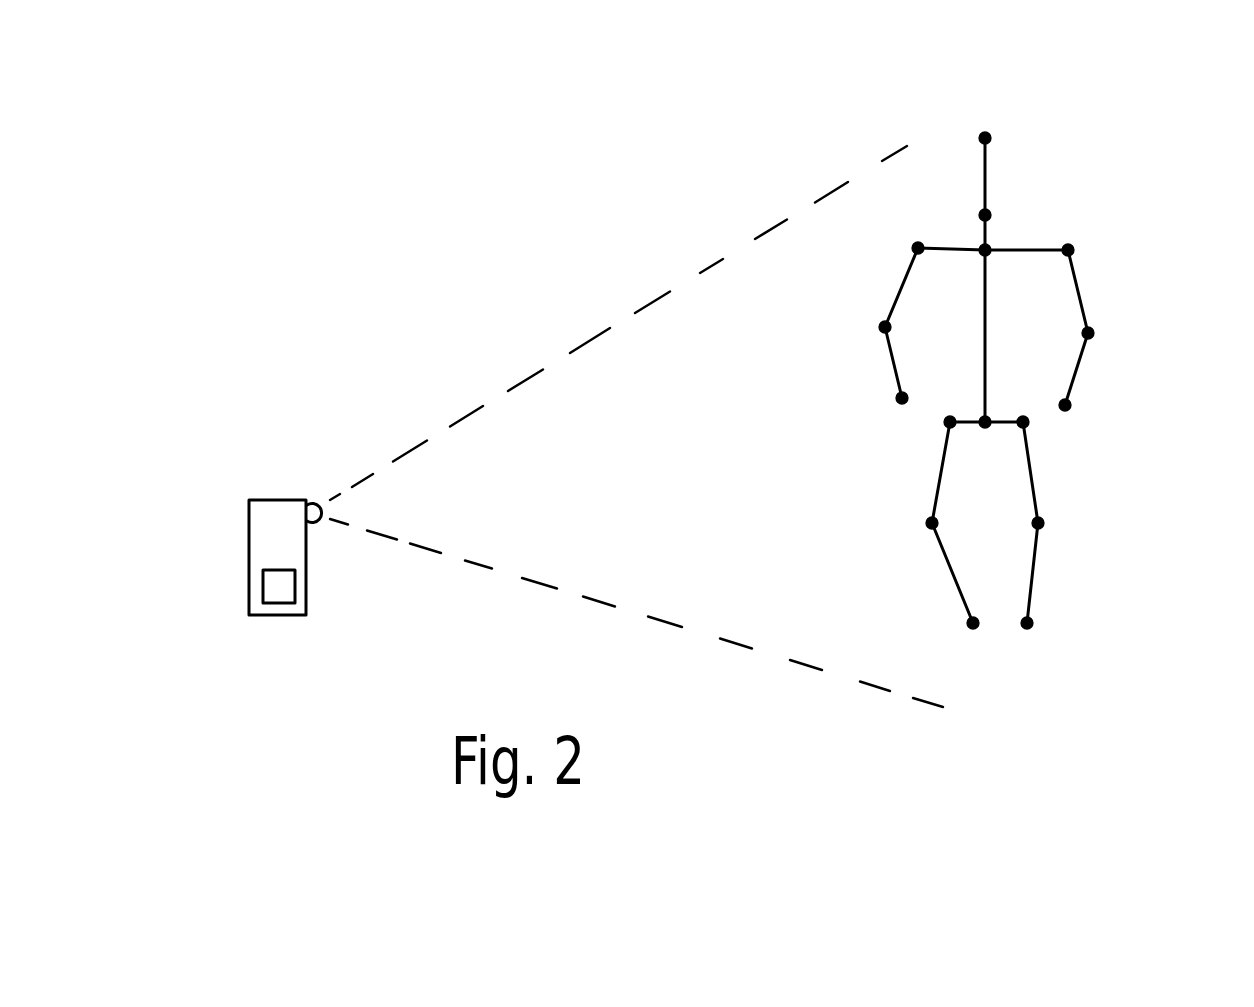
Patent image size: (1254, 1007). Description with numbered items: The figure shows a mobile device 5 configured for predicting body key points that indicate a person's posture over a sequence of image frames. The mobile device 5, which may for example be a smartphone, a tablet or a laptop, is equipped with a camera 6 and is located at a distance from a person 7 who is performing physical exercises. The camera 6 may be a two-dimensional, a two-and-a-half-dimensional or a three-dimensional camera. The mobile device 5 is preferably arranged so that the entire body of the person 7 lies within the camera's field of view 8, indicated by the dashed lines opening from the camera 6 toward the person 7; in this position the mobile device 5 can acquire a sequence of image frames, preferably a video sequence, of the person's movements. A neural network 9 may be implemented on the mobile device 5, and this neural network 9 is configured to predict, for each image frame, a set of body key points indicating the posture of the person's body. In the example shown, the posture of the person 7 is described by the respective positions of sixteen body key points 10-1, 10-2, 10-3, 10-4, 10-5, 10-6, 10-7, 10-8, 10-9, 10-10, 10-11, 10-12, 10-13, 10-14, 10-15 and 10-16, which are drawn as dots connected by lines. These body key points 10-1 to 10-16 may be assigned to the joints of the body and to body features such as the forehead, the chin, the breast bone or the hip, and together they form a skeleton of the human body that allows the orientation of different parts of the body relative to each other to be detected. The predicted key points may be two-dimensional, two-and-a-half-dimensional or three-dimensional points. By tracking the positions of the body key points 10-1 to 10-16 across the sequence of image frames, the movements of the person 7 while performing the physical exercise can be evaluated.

The mobile device 5 is at (252, 514).
The camera 6 is at (320, 503).
The person 7 is at (1174, 136).
The field of view 8 is at (365, 483).
The neural network 9 is at (283, 596).
The body key point 10-1 is at (991, 137).
The body key point 10-2 is at (991, 214).
The body key point 10-3 is at (988, 256).
The body key point 10-4 is at (1074, 249).
The body key point 10-5 is at (914, 244).
The body key point 10-6 is at (1094, 333).
The body key point 10-7 is at (879, 326).
The body key point 10-8 is at (1071, 407).
The body key point 10-9 is at (896, 398).
The body key point 10-10 is at (985, 428).
The body key point 10-11 is at (1024, 416).
The body key point 10-12 is at (949, 416).
The body key point 10-13 is at (1044, 524).
The body key point 10-14 is at (926, 525).
The body key point 10-15 is at (1033, 624).
The body key point 10-16 is at (967, 623).